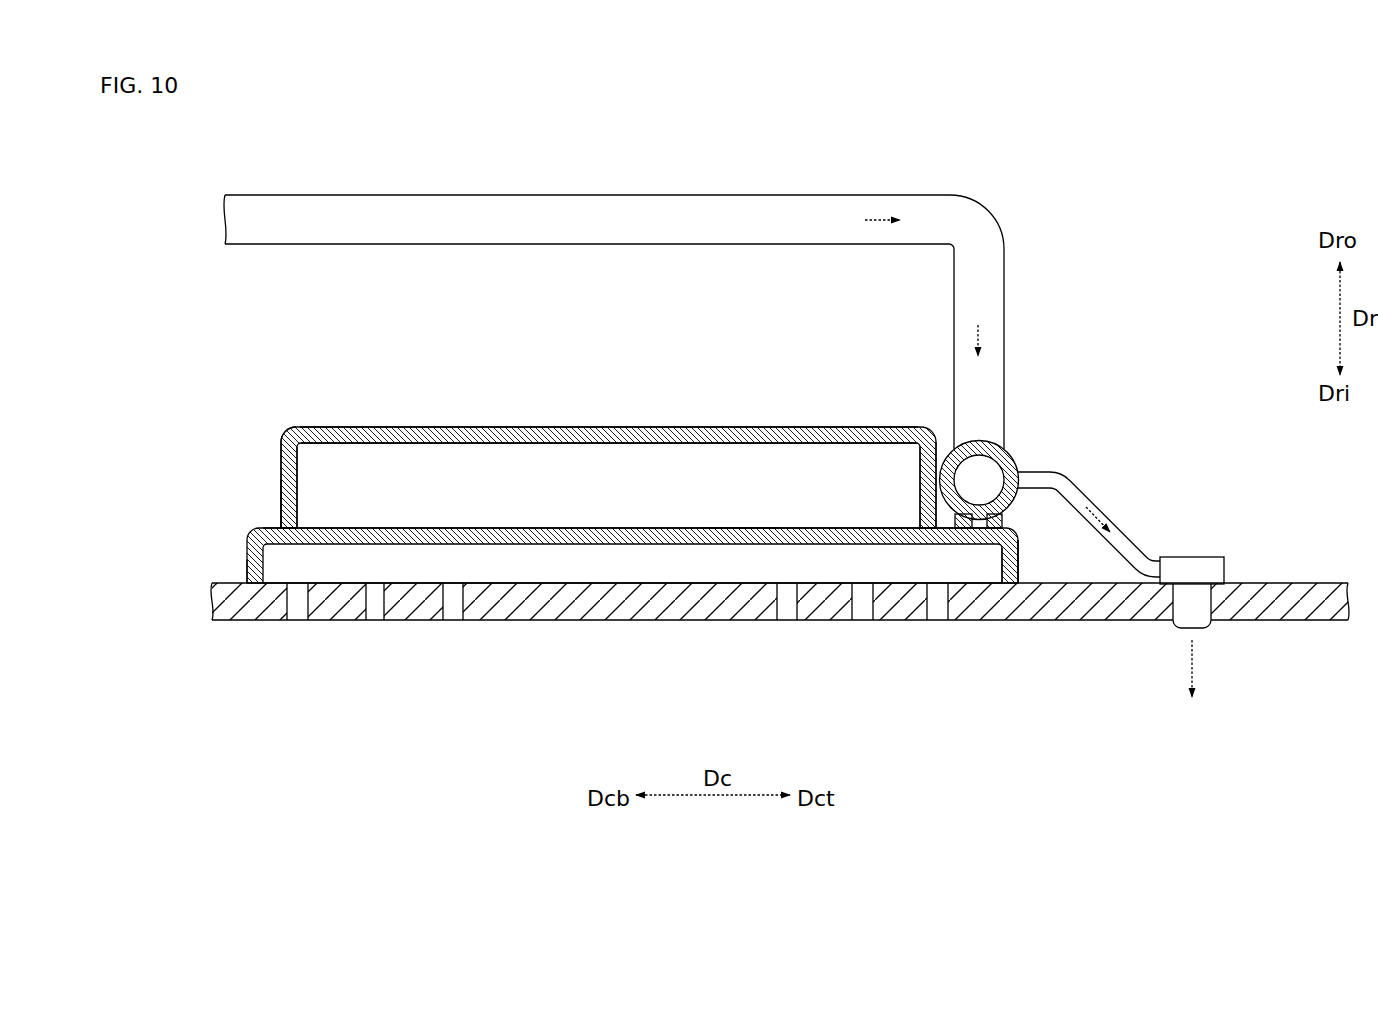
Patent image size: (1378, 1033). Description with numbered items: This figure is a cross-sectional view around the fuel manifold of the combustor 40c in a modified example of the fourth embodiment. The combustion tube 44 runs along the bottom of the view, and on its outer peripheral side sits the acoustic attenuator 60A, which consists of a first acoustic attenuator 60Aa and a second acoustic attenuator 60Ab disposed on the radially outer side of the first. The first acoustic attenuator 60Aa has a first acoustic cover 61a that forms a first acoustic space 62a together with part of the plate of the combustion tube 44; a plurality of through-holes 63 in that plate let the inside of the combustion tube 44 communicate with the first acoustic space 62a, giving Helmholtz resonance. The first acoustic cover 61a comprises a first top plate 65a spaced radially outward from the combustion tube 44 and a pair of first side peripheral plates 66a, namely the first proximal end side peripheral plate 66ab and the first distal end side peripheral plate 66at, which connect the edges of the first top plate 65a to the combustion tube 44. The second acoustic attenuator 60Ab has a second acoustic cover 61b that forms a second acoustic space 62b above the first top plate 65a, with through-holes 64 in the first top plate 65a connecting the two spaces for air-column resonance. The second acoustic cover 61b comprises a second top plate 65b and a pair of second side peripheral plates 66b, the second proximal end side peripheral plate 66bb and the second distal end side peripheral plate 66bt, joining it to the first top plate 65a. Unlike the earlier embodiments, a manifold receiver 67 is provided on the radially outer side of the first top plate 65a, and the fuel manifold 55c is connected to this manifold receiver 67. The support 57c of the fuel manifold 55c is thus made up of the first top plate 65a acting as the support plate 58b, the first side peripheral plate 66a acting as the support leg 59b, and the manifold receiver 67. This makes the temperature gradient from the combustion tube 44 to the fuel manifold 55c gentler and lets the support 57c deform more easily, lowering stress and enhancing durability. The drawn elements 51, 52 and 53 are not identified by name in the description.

The combustor 40c is at (1140, 178).
The supply pipe 51 is at (520, 212).
The connection portion 52 is at (1138, 552).
The discharge port 53 is at (1204, 556).
The combustion tube 44 is at (780, 641).
The through-holes 63 is at (378, 602).
The first acoustic space 62a is at (555, 565).
The second acoustic space 62b is at (545, 478).
The through-holes 64 is at (740, 535).
The first top plate 65a is at (632, 445).
The second top plate 65b is at (640, 427).
The support plate 58b is at (418, 528).
The support leg 59b is at (540, 550).
The first side peripheral plates 66a is at (633, 548).
The first proximal end side peripheral plate 66ab is at (247, 567).
The first distal end side peripheral plate 66at is at (1025, 565).
The second side peripheral plates 66b is at (528, 428).
The second proximal end side peripheral plate 66bb is at (282, 470).
The second distal end side peripheral plate 66bt is at (935, 440).
The first acoustic cover 61a is at (1016, 540).
The second acoustic cover 61b is at (350, 427).
The acoustic attenuator 60A is at (275, 512).
The first acoustic attenuator 60Aa is at (250, 528).
The second acoustic attenuator 60Ab is at (288, 424).
The fuel manifold 55c is at (1017, 453).
The support 57c is at (1012, 512).
The manifold receiver 67 is at (1018, 523).